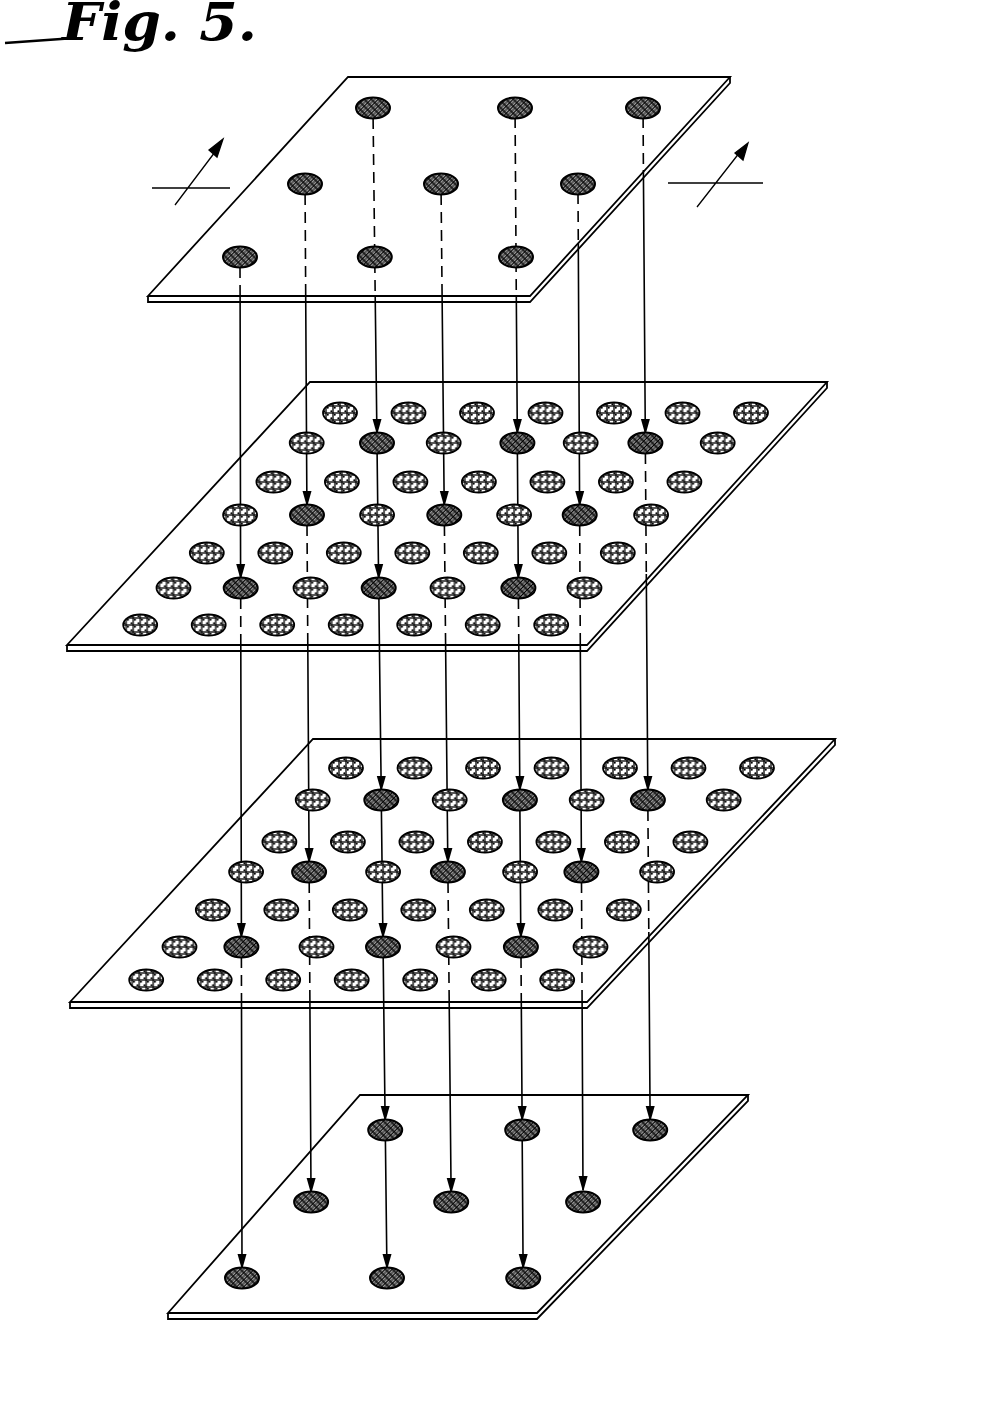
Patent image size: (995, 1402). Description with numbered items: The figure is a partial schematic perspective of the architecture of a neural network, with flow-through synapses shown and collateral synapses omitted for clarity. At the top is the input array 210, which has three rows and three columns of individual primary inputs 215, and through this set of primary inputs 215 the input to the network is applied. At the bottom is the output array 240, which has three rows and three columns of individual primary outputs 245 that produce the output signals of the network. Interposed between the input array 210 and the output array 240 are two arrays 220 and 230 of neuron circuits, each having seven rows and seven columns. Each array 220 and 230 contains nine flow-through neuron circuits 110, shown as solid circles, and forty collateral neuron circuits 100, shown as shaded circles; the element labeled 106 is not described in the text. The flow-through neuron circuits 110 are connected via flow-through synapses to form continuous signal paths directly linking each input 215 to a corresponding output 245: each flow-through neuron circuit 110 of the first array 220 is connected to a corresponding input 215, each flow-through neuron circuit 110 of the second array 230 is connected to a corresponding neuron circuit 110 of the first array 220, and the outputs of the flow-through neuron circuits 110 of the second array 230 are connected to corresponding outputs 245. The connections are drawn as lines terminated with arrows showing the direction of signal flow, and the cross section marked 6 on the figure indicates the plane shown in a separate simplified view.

The input array 210 is at (228, 213).
The primary input 215 is at (378, 100).
The first array of neuron circuits 220 is at (167, 537).
The collateral neuron circuit 100 is at (749, 399).
The flow-through neuron circuit 110 is at (655, 430).
The second array of neuron circuits 230 is at (178, 890).
The interconnect element of second plate 106 is at (758, 754).
The output array 240 is at (220, 1264).
The primary output 245 is at (662, 1122).
The cross section 6— 6 is at (459, 173).